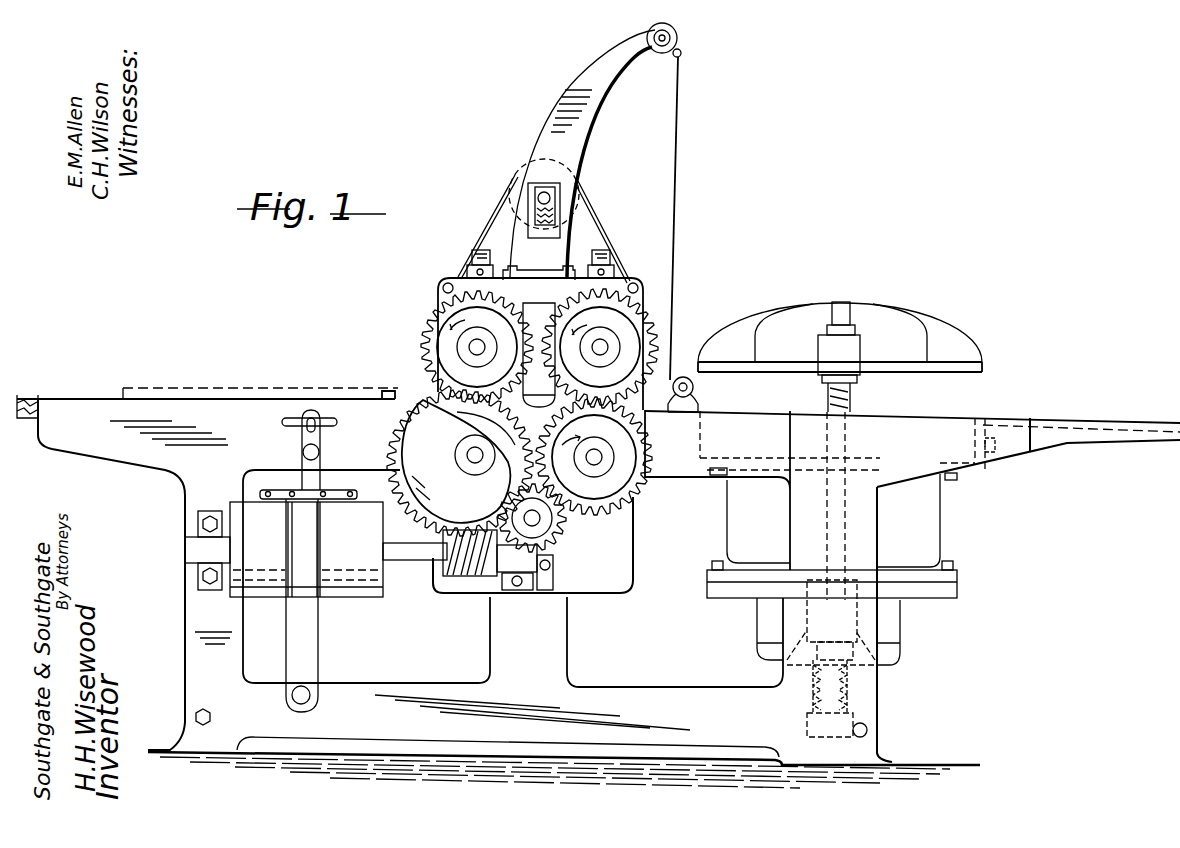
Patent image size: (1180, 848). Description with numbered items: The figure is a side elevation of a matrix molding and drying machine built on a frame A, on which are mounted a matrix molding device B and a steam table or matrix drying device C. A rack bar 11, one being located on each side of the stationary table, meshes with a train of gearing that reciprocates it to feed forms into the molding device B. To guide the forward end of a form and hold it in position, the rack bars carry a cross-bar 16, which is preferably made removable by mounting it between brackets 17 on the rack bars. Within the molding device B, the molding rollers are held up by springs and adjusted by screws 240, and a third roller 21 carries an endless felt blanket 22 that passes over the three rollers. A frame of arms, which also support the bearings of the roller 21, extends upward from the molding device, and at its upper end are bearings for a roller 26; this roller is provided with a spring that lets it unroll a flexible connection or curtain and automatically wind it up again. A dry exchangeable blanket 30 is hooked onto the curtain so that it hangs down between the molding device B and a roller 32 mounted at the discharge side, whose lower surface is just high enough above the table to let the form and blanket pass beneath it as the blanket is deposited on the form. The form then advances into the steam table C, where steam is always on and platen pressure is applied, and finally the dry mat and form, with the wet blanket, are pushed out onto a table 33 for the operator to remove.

The bar 11 is at (95, 378).
The cross-bar 16 is at (355, 378).
The brackets 17 is at (366, 379).
The third roller 21 is at (573, 195).
The endless felt blanket 22 is at (502, 203).
The screws 240 is at (473, 252).
The roller 26 is at (681, 37).
The exchangeable blanket 30 is at (683, 113).
The roller 32 is at (696, 387).
The table 33 is at (1138, 416).
The frame A is at (418, 668).
The matrix molding device B is at (620, 290).
The steam table or matrix drying device C is at (953, 433).